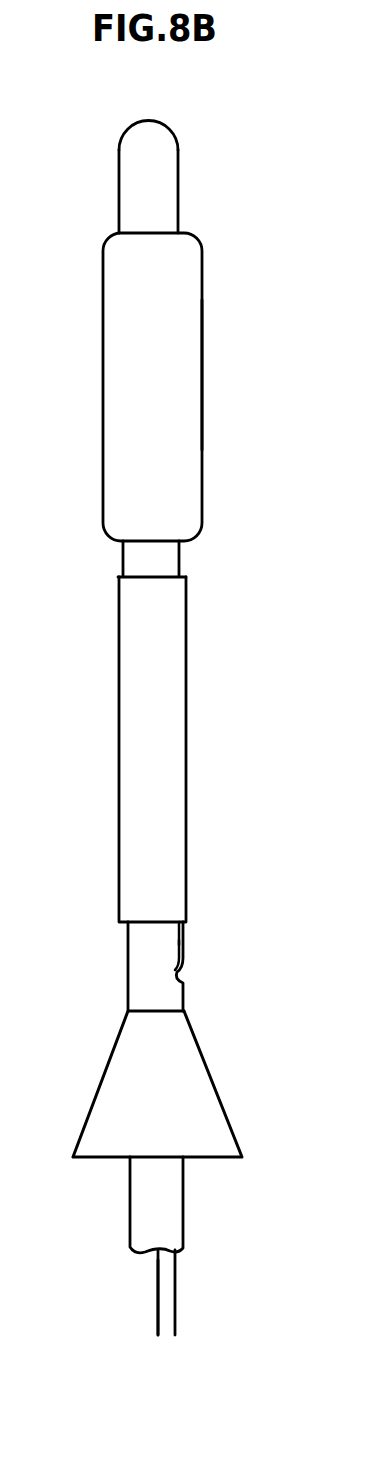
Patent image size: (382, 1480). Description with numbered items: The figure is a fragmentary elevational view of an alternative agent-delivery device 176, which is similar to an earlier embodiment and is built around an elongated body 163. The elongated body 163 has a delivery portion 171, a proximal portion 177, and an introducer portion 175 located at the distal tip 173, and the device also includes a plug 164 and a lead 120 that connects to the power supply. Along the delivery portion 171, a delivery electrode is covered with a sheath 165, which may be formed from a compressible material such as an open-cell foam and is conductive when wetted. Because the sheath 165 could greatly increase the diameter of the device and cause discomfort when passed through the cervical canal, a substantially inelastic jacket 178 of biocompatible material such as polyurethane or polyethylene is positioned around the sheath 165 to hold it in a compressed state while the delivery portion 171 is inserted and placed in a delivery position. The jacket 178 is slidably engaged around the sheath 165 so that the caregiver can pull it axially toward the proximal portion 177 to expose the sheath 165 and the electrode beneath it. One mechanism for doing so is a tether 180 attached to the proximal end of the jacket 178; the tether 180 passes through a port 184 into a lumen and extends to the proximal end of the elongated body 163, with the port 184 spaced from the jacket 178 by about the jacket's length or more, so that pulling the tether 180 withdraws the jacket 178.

The distal tip 173 is at (148, 118).
The introducer portion 175 is at (176, 192).
The delivery portion 171 is at (201, 301).
The sheath 165 is at (201, 380).
The jacket 178 is at (201, 500).
The agent-delivery device 176 is at (98, 683).
The elongated body 163 is at (127, 970).
The port 184 is at (186, 981).
The tether 180 is at (187, 936).
The plug 164 is at (217, 1102).
The proximal portion 177 is at (184, 1206).
The lead 120 is at (157, 1300).